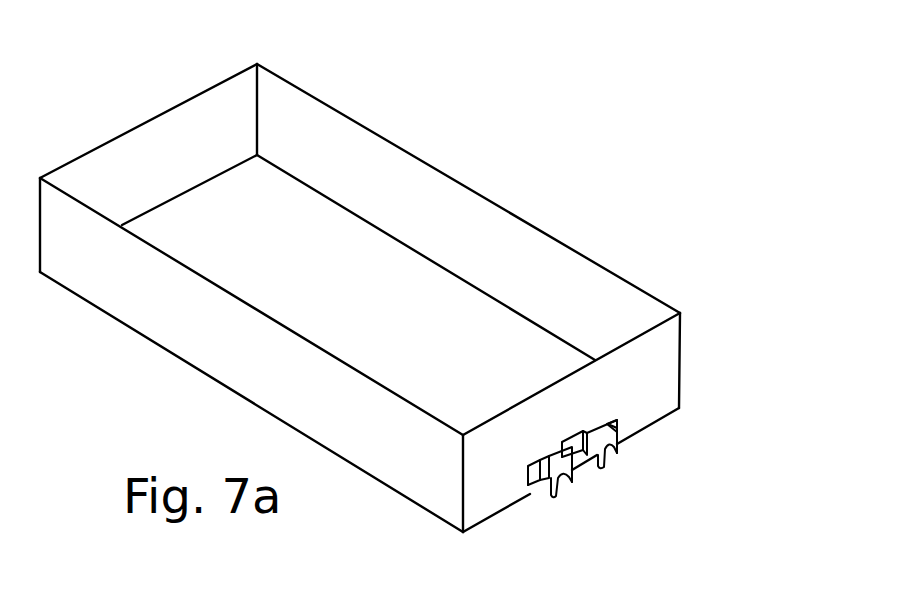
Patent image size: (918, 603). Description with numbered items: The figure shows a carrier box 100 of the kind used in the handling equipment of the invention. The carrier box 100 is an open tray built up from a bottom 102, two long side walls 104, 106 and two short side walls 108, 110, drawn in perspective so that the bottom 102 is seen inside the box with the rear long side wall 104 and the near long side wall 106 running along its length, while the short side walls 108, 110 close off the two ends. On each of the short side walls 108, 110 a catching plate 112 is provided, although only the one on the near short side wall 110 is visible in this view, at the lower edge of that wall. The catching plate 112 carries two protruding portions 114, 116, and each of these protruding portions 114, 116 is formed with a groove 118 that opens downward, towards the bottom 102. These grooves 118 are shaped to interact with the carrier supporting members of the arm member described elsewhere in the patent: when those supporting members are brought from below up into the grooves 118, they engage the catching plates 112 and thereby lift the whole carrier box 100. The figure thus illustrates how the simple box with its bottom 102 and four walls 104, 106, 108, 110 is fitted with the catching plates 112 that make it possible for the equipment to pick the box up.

The carrier box 100 is at (500, 114).
The bottom 102 is at (344, 287).
The long side wall 104 is at (318, 132).
The long side wall 106 is at (163, 335).
The short side wall 108 is at (160, 125).
The short side wall 110 is at (672, 337).
The catching plate 112 is at (532, 488).
The protruding portion 114 is at (618, 443).
The protruding portion 116 is at (557, 480).
The groove 118 is at (560, 483).